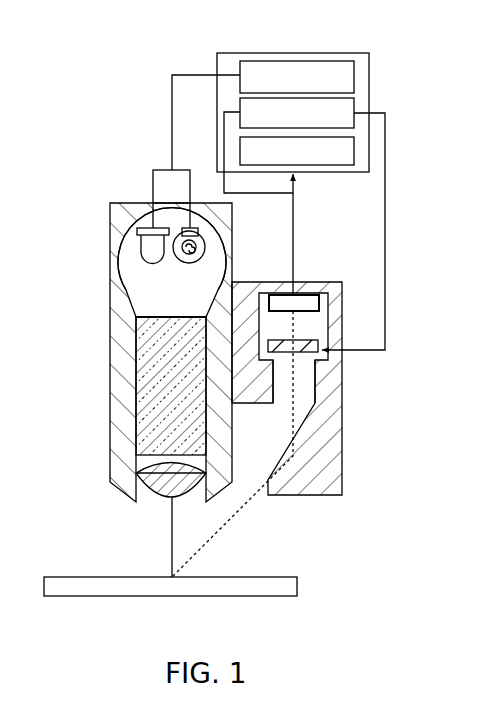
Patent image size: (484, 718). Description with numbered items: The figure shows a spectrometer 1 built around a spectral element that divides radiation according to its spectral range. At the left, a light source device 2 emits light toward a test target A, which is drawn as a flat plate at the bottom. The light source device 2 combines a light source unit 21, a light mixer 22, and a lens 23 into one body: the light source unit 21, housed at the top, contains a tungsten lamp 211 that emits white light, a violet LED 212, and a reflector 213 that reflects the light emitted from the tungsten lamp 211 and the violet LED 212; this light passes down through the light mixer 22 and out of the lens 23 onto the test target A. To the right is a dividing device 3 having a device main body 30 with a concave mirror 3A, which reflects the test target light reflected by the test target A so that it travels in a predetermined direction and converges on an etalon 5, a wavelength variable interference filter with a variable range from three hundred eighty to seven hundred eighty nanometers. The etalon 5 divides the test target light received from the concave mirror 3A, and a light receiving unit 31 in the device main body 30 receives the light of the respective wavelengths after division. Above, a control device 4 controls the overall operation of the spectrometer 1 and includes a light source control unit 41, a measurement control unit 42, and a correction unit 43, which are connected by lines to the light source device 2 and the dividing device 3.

The spectrometer 1 is at (68, 52).
The light source device 2 is at (88, 178).
The light source unit 21 is at (125, 263).
The tungsten lamp 211 is at (190, 264).
The violet LED 212 is at (152, 264).
The reflector 213 is at (132, 218).
The light mixer 22 is at (134, 379).
The lens 23 is at (136, 473).
The dividing device 3 is at (321, 374).
The device main body 30 is at (341, 437).
The light receiving unit 31 is at (307, 293).
The concave mirror 3A is at (278, 470).
The control device 4 is at (360, 38).
The light source control unit 41 is at (354, 73).
The measurement control unit 42 is at (354, 107).
The correction unit 43 is at (354, 147).
The etalon 5 is at (232, 444).
The test target A is at (299, 587).